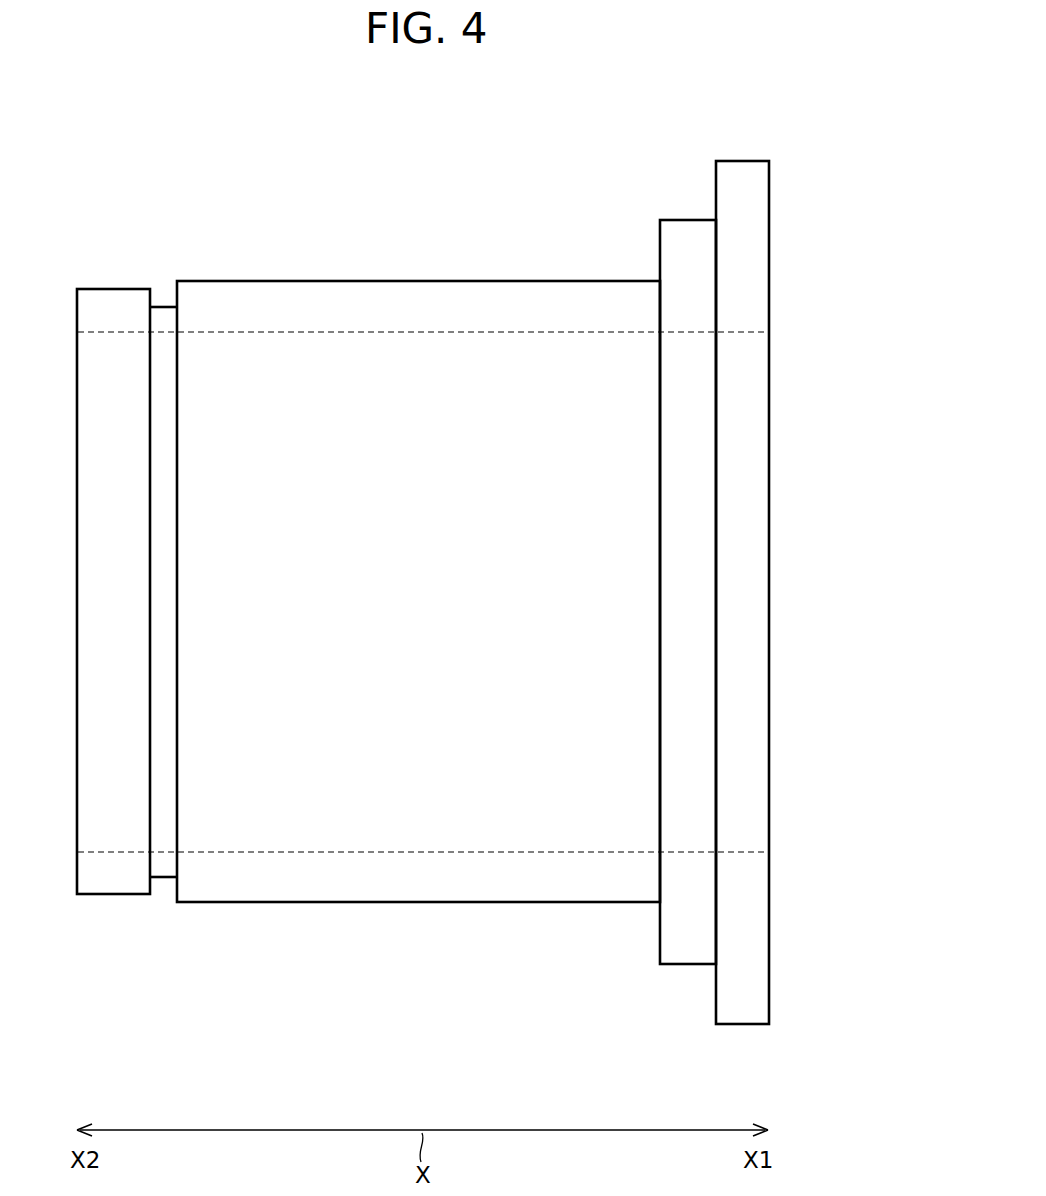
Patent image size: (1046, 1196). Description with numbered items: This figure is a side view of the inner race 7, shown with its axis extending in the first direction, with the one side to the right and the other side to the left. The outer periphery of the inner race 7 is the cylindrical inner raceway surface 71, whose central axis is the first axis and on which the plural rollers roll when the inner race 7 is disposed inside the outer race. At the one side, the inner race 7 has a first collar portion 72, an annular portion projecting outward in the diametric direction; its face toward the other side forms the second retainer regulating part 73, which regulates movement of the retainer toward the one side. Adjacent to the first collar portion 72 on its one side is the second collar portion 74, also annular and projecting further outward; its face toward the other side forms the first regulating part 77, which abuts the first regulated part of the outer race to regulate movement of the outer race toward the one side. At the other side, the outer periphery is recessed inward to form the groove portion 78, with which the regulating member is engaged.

The inner race 7 is at (783, 79).
The inner raceway surface 71 is at (438, 281).
The first collar portion 72 is at (686, 220).
The second retainer regulating part 73 is at (660, 252).
The second collar portion 74 is at (748, 161).
The first regulating part 77 is at (716, 185).
The groove portion 78 is at (162, 282).